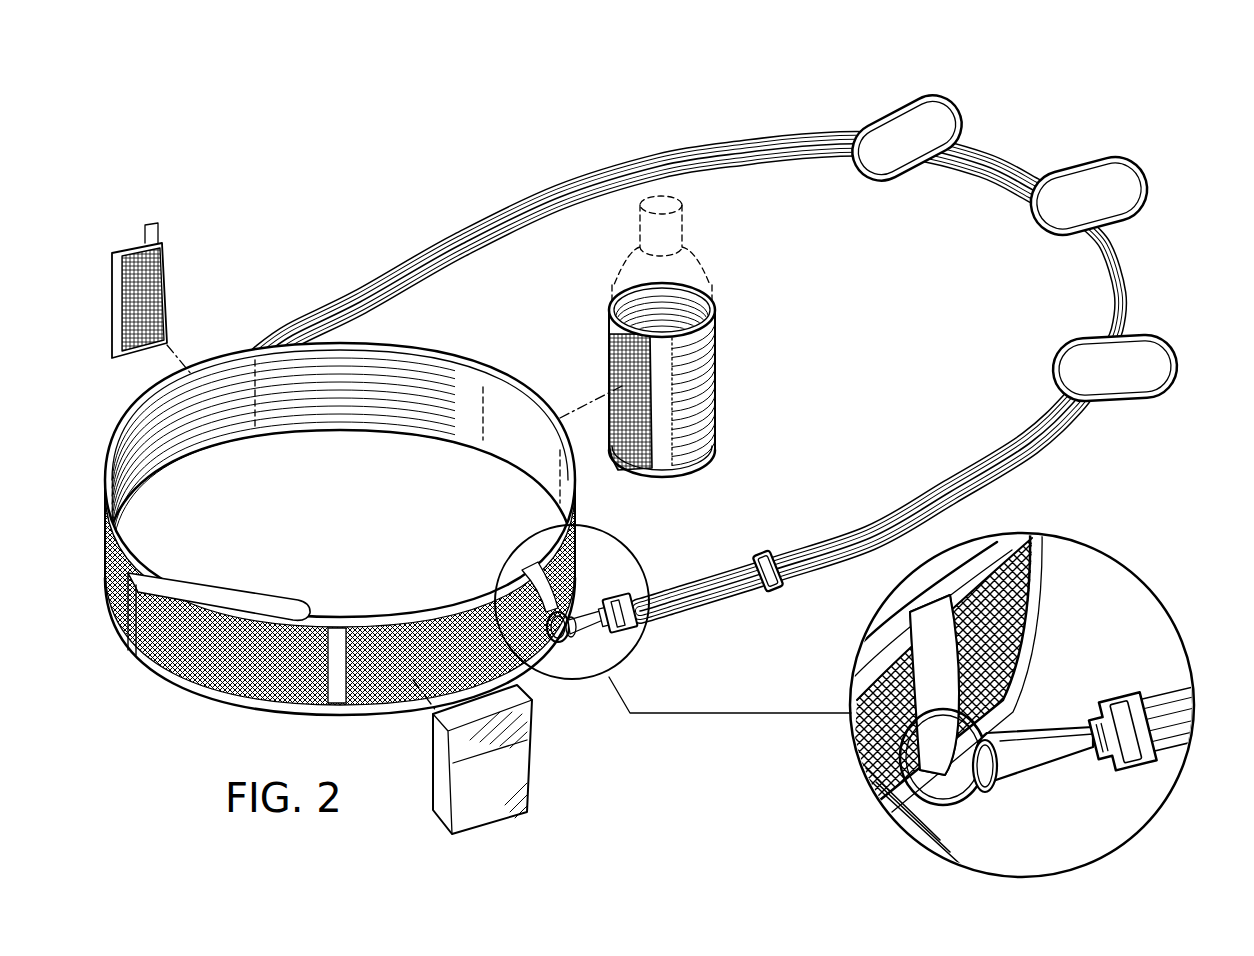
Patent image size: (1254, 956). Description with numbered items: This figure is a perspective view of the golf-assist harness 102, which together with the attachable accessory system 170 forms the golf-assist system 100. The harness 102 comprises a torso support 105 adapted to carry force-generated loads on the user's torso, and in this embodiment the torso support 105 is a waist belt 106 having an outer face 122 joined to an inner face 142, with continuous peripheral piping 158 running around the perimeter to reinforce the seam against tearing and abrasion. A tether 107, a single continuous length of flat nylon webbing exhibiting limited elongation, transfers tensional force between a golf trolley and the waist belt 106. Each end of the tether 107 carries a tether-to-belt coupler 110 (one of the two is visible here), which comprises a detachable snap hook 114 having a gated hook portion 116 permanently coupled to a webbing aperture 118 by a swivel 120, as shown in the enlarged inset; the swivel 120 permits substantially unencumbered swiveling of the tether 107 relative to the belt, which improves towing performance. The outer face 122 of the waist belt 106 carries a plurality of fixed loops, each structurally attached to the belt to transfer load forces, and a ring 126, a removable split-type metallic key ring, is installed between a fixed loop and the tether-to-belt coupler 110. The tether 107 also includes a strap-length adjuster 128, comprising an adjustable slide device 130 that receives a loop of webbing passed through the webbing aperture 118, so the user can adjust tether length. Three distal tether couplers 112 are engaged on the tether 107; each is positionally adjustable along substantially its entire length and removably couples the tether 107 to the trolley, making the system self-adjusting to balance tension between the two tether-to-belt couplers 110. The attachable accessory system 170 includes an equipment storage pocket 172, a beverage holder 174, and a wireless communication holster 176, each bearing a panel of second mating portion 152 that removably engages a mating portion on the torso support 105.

The golf-assist system 100 is at (174, 168).
The golf-assist harness 102 is at (383, 218).
The torso support 105 is at (340, 538).
The waist belt 106 is at (1022, 562).
The tether 107 is at (1040, 465).
The tether-to-belt coupler 110 is at (592, 575).
The tether coupler 112 is at (958, 118).
The snap hook 114 is at (1041, 787).
The gated hook portion 116 is at (1050, 777).
The webbing aperture 118 is at (1122, 700).
The swivel 120 is at (1088, 722).
The outer face 122 is at (178, 682).
The ring 126 is at (915, 835).
The strap-length adjuster 128 is at (739, 556).
The adjustable slide device 130 is at (766, 556).
The inner face 142 is at (440, 425).
The second mating portion 152 is at (164, 302).
The peripheral piping 158 is at (397, 335).
The attachable accessory system 170 is at (738, 312).
The equipment storage pocket 172 is at (482, 803).
The beverage holder 174 is at (718, 371).
The wireless communication holster 176 is at (163, 250).